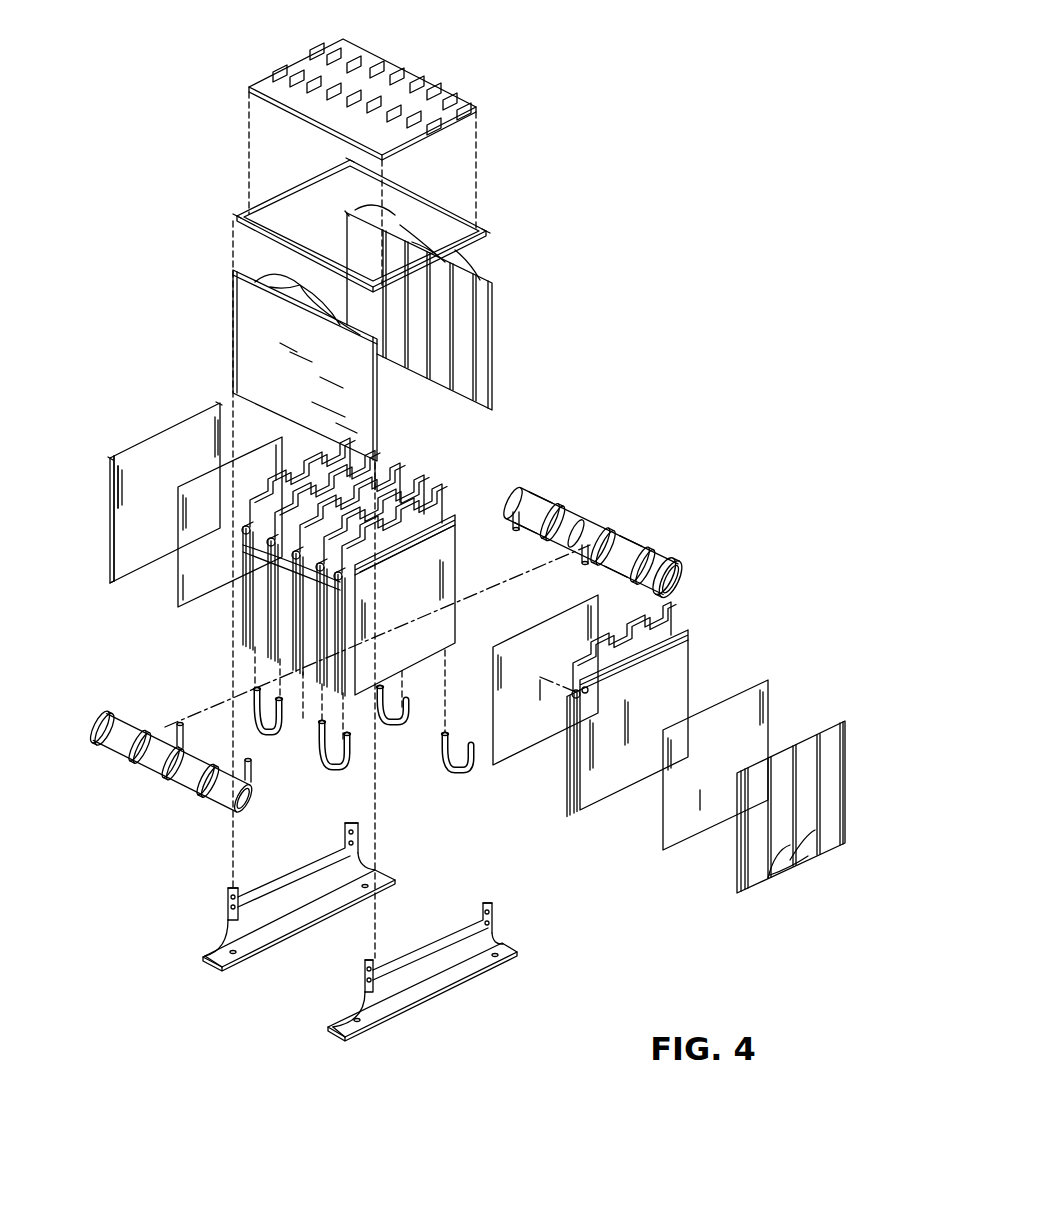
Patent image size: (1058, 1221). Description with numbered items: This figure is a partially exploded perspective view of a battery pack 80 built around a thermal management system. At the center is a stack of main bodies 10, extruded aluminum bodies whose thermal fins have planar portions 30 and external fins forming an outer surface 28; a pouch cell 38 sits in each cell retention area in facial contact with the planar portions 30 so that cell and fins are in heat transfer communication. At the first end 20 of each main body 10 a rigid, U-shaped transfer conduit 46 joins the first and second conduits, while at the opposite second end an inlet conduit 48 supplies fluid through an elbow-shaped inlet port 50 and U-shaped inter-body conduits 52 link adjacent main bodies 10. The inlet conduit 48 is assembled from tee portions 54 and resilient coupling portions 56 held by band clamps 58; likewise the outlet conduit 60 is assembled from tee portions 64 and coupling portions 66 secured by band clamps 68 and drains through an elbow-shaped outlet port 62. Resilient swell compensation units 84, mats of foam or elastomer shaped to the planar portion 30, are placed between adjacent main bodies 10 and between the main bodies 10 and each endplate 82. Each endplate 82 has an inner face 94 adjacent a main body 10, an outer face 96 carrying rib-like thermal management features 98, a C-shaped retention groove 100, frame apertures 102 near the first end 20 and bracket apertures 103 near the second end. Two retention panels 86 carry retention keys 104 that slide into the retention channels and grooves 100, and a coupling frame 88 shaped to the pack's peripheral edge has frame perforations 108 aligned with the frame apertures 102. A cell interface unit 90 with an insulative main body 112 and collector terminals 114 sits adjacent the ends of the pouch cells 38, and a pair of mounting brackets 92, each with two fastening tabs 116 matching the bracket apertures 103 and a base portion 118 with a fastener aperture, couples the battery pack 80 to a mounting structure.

The main body 10 is at (463, 651).
The first end 20 is at (456, 523).
The outer surface 28 is at (368, 601).
The planar portion 30 is at (424, 600).
The pouch cell 38 is at (415, 470).
The transfer conduit 46 is at (318, 569).
The inlet conduit 48 is at (170, 740).
The inlet port 50 is at (183, 722).
The inter-body conduit 52 is at (342, 736).
The tee portion 54 is at (176, 738).
The coupling portion 56 is at (174, 764).
The band clamp 58 is at (103, 745).
The outlet conduit 60 is at (599, 529).
The outlet port 62 is at (580, 555).
The tee portion 64 is at (578, 534).
The coupling portion 66 is at (625, 556).
The band clamp 68 is at (597, 544).
The battery pack 80 is at (664, 108).
The endplate 82 is at (155, 425).
The swell compensation unit 84 is at (190, 605).
The retention panel 86 is at (235, 340).
The coupling frame 88 is at (418, 192).
The cell interface unit 90 is at (367, 144).
The mounting bracket 92 is at (360, 940).
The inner face 94 is at (136, 521).
The outer face 96 is at (130, 447).
The thermal management feature 98 is at (824, 720).
The retention groove 100 is at (222, 428).
The frame aperture 102 is at (216, 402).
The bracket aperture 103 is at (108, 578).
The retention key 104 is at (272, 287).
The frame perforation 108 is at (345, 160).
The insulative main body 112 is at (405, 80).
The collector terminal 114 is at (351, 60).
The fastening tab 116 is at (240, 888).
The base portion 118 is at (245, 950).